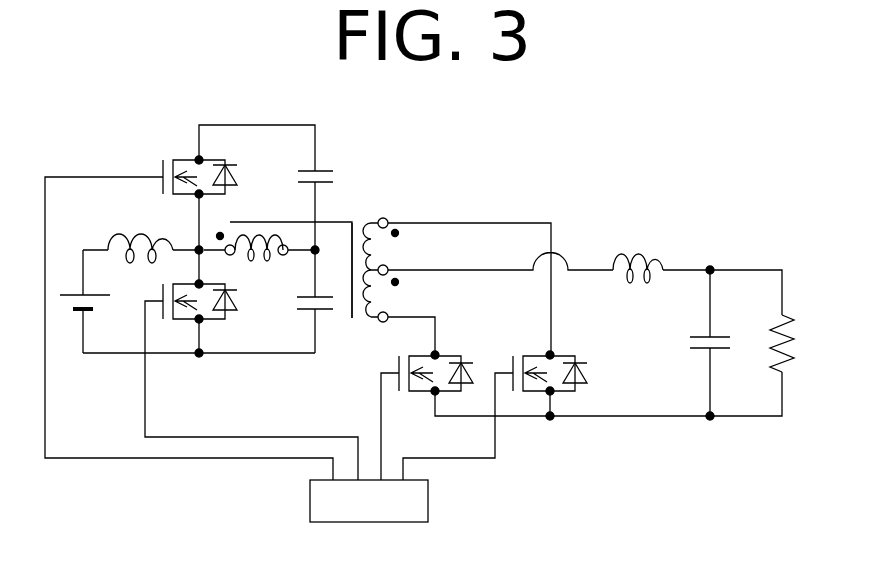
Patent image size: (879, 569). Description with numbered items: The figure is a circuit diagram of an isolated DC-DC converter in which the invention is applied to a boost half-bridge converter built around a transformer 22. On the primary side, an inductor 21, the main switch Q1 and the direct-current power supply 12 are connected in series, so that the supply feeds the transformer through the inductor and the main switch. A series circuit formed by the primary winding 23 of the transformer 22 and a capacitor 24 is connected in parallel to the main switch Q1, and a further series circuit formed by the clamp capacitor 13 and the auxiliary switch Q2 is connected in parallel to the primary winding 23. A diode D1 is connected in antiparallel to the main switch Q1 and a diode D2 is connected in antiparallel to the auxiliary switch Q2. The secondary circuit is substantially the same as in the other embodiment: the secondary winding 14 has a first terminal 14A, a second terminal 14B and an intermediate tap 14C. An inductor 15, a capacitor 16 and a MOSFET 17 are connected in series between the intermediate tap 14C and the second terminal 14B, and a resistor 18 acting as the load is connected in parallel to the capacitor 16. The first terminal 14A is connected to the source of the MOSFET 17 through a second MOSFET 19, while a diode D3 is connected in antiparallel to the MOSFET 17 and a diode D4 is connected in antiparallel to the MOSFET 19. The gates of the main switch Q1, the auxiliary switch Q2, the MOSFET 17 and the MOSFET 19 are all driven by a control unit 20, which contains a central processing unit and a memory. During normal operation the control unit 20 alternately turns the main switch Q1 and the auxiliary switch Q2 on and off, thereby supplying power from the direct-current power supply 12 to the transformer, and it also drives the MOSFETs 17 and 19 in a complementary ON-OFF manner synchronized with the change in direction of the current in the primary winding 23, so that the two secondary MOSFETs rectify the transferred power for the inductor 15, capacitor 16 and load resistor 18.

The direct-current power supply 12 is at (95, 295).
The clamp capacitor 13 is at (323, 168).
The secondary winding 14 is at (370, 220).
The first terminal 14A is at (389, 218).
The second terminal 14B is at (389, 313).
The intermediate tap 14C is at (389, 266).
The inductor 15 is at (642, 283).
The capacitor 16 is at (720, 337).
The MOSFET 17 is at (428, 394).
The resistor (load) 18 is at (770, 353).
The MOSFET 19 is at (540, 353).
The control unit 20 is at (428, 501).
The inductor 21 is at (122, 236).
The transformer 22 is at (361, 188).
The primary winding 23 is at (260, 247).
The capacitor 24 is at (303, 295).
The main switch Q1 is at (187, 321).
The auxiliary switch Q2 is at (187, 158).
The diode D1 is at (240, 307).
The diode D2 is at (240, 177).
The diode D3 is at (480, 367).
The diode D4 is at (585, 367).